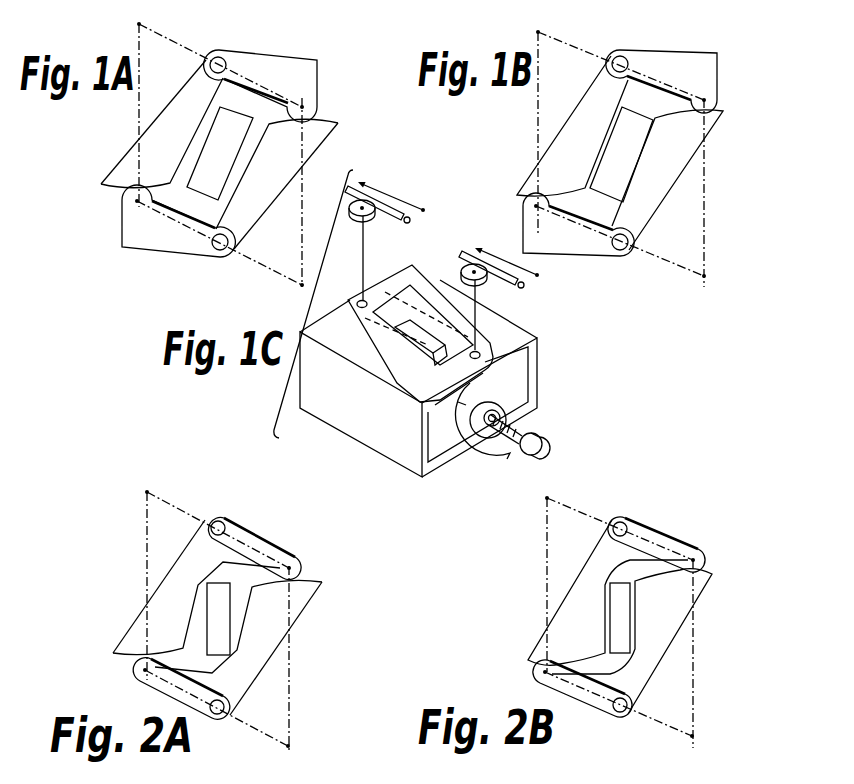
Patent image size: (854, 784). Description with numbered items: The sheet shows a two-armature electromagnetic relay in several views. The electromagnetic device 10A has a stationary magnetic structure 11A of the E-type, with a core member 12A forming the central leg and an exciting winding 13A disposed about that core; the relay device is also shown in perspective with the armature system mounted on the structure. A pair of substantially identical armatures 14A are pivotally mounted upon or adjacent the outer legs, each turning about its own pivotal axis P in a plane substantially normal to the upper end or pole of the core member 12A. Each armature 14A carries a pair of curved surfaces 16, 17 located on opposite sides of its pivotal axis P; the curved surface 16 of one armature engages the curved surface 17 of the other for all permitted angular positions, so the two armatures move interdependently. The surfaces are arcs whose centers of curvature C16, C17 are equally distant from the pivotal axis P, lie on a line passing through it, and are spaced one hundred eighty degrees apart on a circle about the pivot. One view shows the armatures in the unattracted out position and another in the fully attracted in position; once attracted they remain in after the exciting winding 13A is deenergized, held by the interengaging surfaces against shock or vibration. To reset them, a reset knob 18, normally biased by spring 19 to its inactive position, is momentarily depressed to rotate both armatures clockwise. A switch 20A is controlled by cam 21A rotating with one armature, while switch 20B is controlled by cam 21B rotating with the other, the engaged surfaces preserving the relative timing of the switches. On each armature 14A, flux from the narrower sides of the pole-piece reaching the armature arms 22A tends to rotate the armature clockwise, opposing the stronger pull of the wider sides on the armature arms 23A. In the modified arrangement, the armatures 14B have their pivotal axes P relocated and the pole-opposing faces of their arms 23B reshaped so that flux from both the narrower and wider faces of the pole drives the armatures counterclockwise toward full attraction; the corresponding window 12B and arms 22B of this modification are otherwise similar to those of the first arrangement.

In FIG. 1A, the electromagnetic device 10A is at (340, 51).
In FIG. 1B, the electromagnetic device 10A is at (638, 39).
In FIG. 1C, the stationary magnetic structure 11A is at (407, 455).
In FIG. 1A, the core member 12A is at (217, 145).
In FIG. 1B, the core member 12A is at (643, 125).
In FIG. 1C, the core member 12A is at (422, 335).
In FIG. 1C, the exciting winding 13A is at (500, 455).
In FIG. 1A, the armature 14A is at (178, 102).
In FIG. 1B, the armature 14A is at (713, 67).
In FIG. 1C, the armature 14A is at (433, 295).
In FIG. 1A, the curved surface 16 is at (310, 108).
In FIG. 1B, the curved surface 16 is at (713, 107).
In FIG. 1A, the curved surface 17 is at (318, 116).
In FIG. 1B, the curved surface 17 is at (723, 108).
In FIG. 1C, the reset knob 18 is at (543, 448).
In FIG. 1C, the spring 19 is at (503, 436).
In FIG. 1C, the switch 20A is at (390, 200).
In FIG. 1C, the switch 20B is at (492, 260).
In FIG. 1C, the cam 21A is at (353, 217).
In FIG. 1C, the cam 21B is at (463, 267).
In FIG. 1A, the armature arm 22A is at (267, 56).
In FIG. 1A, the armature arm 23A is at (192, 77).
In FIG. 1A, the center of curvature C16 is at (304, 105).
In FIG. 1B, the center of curvature C16 is at (704, 97).
In FIG. 2A, the center of curvature C16 is at (300, 567).
In FIG. 2B, the center of curvature C16 is at (703, 555).
In FIG. 1A, the center of curvature C17 is at (131, 24).
In FIG. 1B, the center of curvature C17 is at (541, 32).
In FIG. 2A, the center of curvature C17 is at (150, 490).
In FIG. 2B, the center of curvature C17 is at (550, 497).
In FIG. 1A, the pivotal axis P is at (221, 57).
In FIG. 1B, the pivotal axis P is at (623, 248).
In FIG. 1C, the pivotal axis P is at (365, 274).
In FIG. 2A, the pivotal axis P is at (221, 524).
In FIG. 2B, the pivotal axis P is at (624, 521).
In FIG. 2A, the window opening 12B is at (220, 628).
In FIG. 2B, the window opening 12B is at (622, 623).
In FIG. 2A, the armature 14B is at (262, 537).
In FIG. 2B, the armature 14B is at (672, 533).
In FIG. 2A, the armature arm 22B is at (272, 552).
In FIG. 2A, the armature arm 23B is at (193, 555).